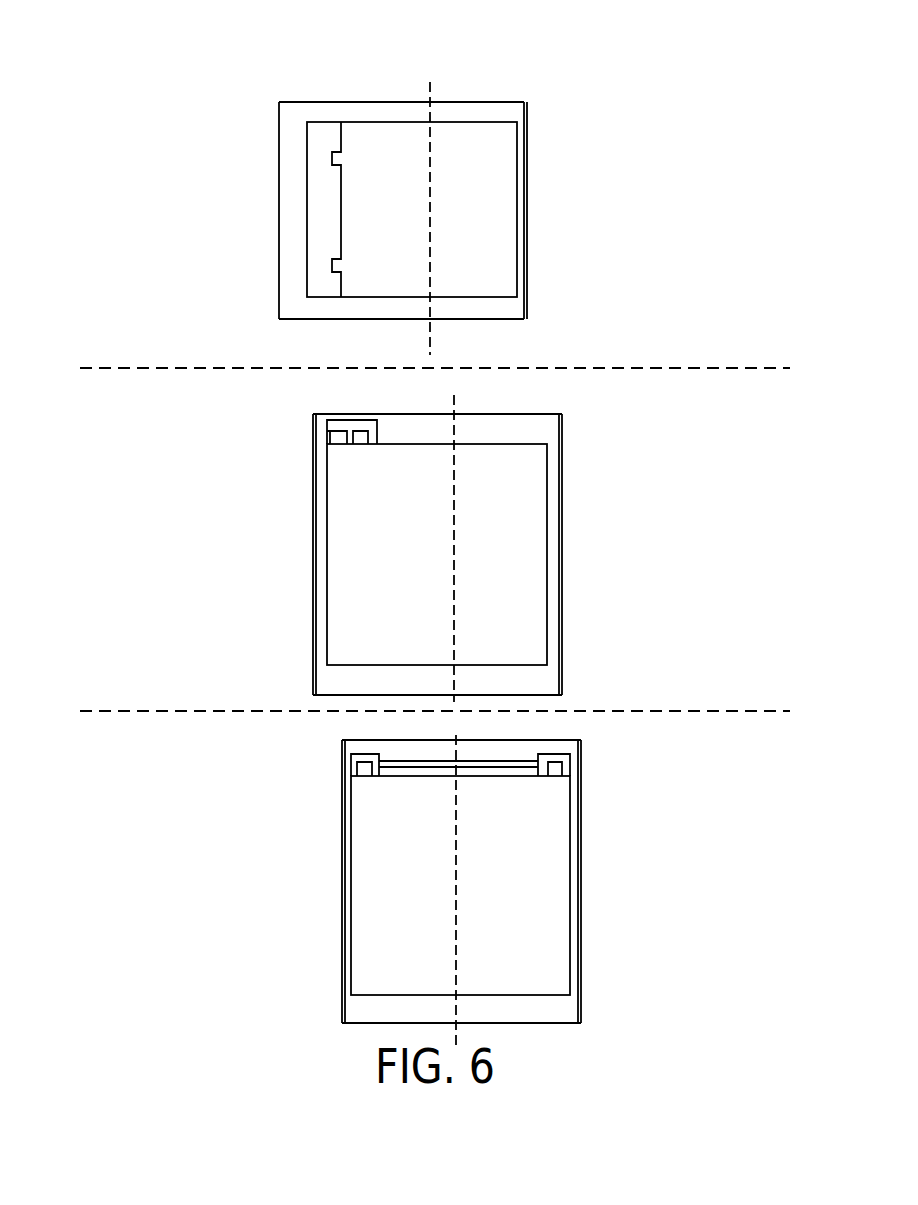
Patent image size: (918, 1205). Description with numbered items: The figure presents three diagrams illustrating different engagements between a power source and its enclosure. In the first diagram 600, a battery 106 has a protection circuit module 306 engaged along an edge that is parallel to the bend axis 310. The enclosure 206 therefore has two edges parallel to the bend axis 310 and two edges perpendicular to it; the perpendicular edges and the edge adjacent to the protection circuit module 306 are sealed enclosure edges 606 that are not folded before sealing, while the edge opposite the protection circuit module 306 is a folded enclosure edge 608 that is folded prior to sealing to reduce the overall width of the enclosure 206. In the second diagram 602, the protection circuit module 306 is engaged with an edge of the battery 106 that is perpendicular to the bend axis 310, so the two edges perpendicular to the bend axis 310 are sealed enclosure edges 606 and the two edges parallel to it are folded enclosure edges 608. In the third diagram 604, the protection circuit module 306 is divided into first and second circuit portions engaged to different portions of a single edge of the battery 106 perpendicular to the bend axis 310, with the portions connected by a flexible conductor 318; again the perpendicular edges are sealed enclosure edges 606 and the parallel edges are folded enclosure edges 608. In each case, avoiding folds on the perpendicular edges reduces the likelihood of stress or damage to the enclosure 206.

The first diagram 600 is at (608, 50).
The second diagram 602 is at (601, 415).
The third diagram 604 is at (605, 754).
The enclosure 206 is at (440, 559).
The sealed enclosure edge 606 is at (613, 1042).
The folded enclosure edge 608 is at (527, 297).
The battery 106 is at (497, 221).
The protection circuit module 306 is at (333, 435).
The bend axis 310 is at (430, 178).
The flexible conductor 318 is at (417, 765).